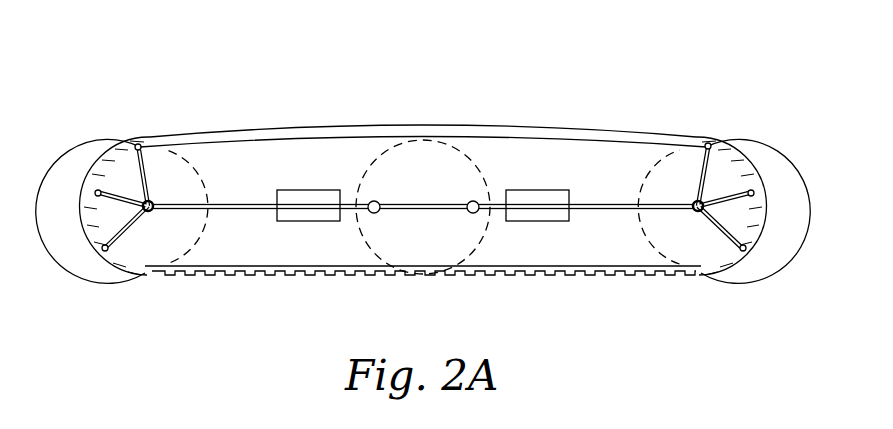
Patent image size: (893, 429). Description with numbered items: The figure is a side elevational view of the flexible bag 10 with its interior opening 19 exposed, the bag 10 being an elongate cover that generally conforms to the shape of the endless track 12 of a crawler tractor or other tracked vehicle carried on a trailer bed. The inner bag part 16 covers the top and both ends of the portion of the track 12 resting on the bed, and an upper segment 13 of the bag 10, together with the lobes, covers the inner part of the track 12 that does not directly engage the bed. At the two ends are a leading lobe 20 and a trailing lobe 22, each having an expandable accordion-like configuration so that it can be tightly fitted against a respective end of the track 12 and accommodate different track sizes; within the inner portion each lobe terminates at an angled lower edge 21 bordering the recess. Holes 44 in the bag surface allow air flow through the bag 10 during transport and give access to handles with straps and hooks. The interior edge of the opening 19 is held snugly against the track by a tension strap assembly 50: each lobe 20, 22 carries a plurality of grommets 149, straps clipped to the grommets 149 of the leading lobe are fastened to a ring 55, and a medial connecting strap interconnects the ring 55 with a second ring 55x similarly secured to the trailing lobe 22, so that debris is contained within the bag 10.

The flexible bag 10 is at (472, 128).
The endless track 12 is at (630, 276).
The upper segment 13 is at (407, 135).
The inner bag part 16 is at (240, 137).
The interior opening 19 is at (311, 150).
The leading lobe 20 is at (95, 170).
The angled lower edge 21 is at (150, 275).
The trailing lobe 22 is at (752, 170).
The holes 44 is at (370, 202).
The tension strap assembly 50 is at (415, 202).
The ring 55 is at (151, 202).
The second ring 55x is at (696, 202).
The grommets 149 is at (139, 144).